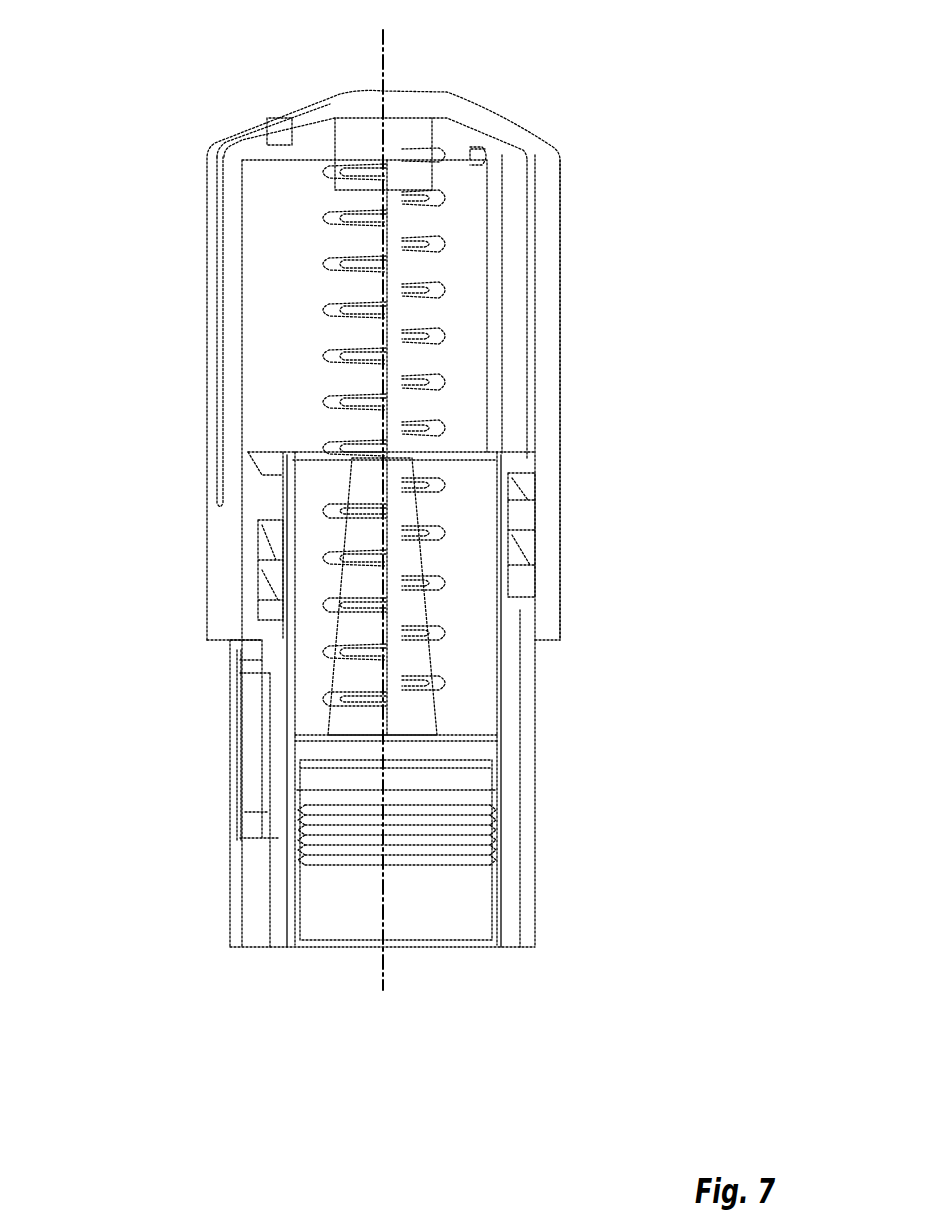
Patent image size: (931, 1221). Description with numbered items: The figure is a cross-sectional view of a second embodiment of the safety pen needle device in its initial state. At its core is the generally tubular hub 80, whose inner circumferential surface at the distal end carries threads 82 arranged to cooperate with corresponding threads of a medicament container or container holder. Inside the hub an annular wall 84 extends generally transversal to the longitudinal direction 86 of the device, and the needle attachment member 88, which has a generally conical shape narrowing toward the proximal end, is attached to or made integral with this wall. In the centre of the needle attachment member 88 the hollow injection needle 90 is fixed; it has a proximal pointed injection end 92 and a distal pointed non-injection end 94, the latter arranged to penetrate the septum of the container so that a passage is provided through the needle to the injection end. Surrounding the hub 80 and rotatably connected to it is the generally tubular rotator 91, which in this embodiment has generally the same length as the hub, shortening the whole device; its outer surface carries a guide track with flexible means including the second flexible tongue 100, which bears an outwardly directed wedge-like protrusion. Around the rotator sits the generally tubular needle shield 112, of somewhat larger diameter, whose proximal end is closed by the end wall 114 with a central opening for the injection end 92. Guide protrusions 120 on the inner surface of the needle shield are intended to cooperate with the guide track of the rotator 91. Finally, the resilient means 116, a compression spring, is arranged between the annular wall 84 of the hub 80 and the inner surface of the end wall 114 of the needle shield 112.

The hub 80 is at (290, 875).
The threads 82 is at (478, 827).
The annular wall 84 is at (322, 745).
The longitudinal direction 86 is at (383, 44).
The needle attachment member 88 is at (407, 615).
The injection needle 90 is at (383, 295).
The rotator 91 is at (513, 708).
The proximal pointed injection end 92 is at (383, 198).
The distal pointed non-injection end 94 is at (383, 873).
The second flexible tongue 100 is at (275, 614).
The needle shield 112 is at (548, 424).
The end wall 114 is at (536, 152).
The resilient means 116 is at (333, 413).
The guide protrusions 120 is at (275, 497).